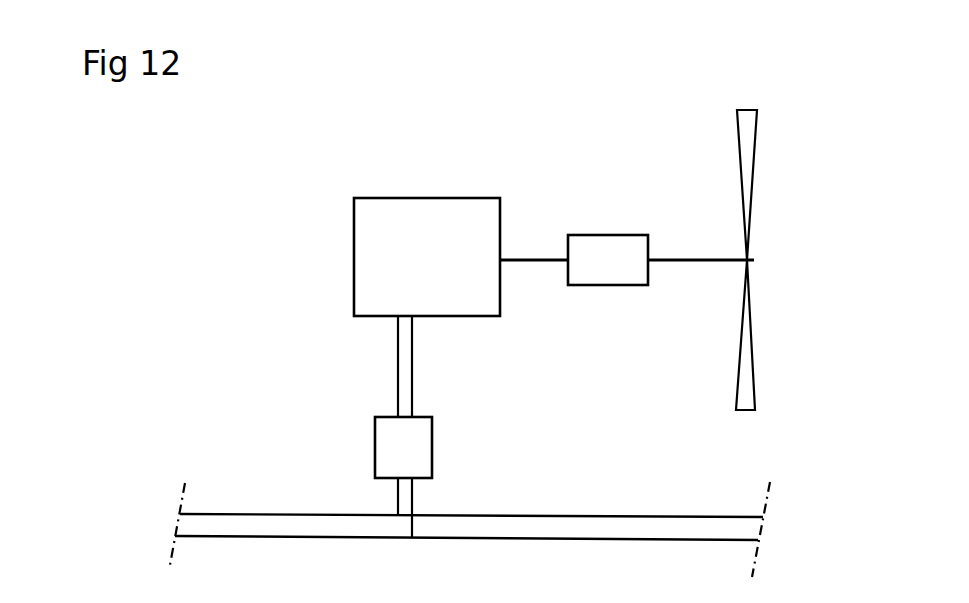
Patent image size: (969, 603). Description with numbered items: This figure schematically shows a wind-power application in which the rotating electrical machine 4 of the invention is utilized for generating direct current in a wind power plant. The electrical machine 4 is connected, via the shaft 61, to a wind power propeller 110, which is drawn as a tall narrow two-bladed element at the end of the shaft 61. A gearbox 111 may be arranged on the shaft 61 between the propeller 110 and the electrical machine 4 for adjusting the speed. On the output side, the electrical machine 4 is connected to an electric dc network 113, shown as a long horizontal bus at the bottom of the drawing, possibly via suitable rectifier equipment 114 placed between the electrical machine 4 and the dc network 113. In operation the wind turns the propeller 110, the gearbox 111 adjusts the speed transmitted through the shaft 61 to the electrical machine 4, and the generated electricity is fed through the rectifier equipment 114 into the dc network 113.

The rotating electrical machine 4 is at (402, 243).
The shaft 61 is at (537, 255).
The gearbox 111 is at (605, 247).
The wind power propeller 110 is at (745, 148).
The rectifier equipment 114 is at (428, 449).
The electric dc network 113 is at (596, 503).